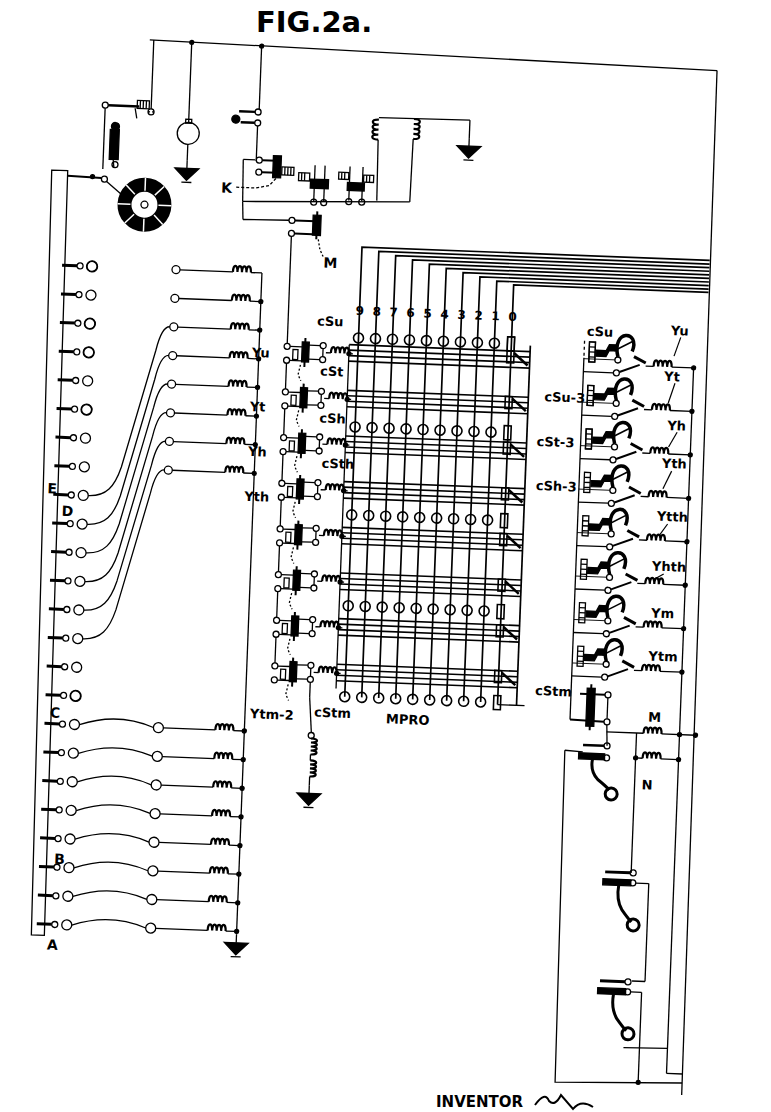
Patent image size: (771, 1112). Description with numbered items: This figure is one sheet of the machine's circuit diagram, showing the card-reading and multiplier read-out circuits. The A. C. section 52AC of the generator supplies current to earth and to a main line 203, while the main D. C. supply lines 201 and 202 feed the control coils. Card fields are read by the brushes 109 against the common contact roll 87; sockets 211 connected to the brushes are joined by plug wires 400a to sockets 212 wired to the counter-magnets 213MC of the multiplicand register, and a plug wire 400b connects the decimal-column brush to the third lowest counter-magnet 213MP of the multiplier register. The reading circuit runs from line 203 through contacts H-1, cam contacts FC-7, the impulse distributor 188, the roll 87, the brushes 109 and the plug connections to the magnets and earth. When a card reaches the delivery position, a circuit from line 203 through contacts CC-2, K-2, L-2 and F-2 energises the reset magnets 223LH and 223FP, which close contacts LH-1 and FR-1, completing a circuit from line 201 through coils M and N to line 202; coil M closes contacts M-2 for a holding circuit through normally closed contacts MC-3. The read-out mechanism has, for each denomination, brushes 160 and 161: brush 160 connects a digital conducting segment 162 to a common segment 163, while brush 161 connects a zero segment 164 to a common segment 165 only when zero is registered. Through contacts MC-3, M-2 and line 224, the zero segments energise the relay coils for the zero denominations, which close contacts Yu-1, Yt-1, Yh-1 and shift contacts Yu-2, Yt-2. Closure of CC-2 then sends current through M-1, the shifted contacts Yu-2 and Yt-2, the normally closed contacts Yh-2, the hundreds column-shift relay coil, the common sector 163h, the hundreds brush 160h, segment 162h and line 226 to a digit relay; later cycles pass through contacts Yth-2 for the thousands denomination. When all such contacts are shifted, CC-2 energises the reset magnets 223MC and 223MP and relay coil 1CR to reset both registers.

The common contact roll 87 is at (72, 267).
The brushes 109 is at (86, 360).
The sockets 211 is at (86, 418).
The sockets 212 is at (167, 274).
The counter-magnets 213MP is at (226, 486).
The counter-magnets 213MC is at (228, 728).
The plug wires 400a is at (128, 730).
The plug wire 400b is at (167, 515).
The impulse distributor 188 is at (156, 223).
The A. C. section of the generator 52AC is at (178, 132).
The main line 203 is at (573, 59).
The line 226 is at (527, 258).
The digital conducting segment 162 is at (490, 322).
The common segment 163 is at (512, 322).
The brush 160 is at (510, 340).
The brush 161 is at (510, 356).
The common segment 165 is at (526, 367).
The zero segment 164 is at (526, 411).
The brush of the hundreds denomination 160h is at (526, 458).
The segment 162h is at (508, 490).
The common sector of the hundreds denomination 163h is at (508, 520).
The line 224 is at (520, 705).
The main supply line 201 is at (575, 1050).
The main supply line 202 is at (628, 1046).
The reset magnet 223LH is at (362, 122).
The reset magnet 223FP is at (400, 136).
The reset magnet 223MC is at (326, 747).
The reset magnet 223MP is at (326, 771).
The relay coil 1CR is at (326, 790).
The contacts H-1 is at (106, 110).
The cam contacts FC-7 is at (106, 166).
The cam contacts CC-2 is at (244, 114).
The contacts K-2 is at (260, 162).
The contacts L-2 is at (306, 182).
The contacts F-2 is at (340, 168).
The contacts M-1 is at (310, 229).
The contacts M-2 is at (606, 695).
The contacts MC-3 is at (586, 744).
The contacts LH-1 is at (618, 862).
The latch relay FR-1 is at (618, 970).
The contacts Yu-2 is at (275, 350).
The contacts Yt-2 is at (275, 395).
The contacts Yh-2 is at (275, 441).
The contacts Yth-2 is at (275, 486).
The contacts Yu-1 is at (639, 356).
The contacts Yt-1 is at (638, 399).
The contacts Yh-1 is at (636, 443).